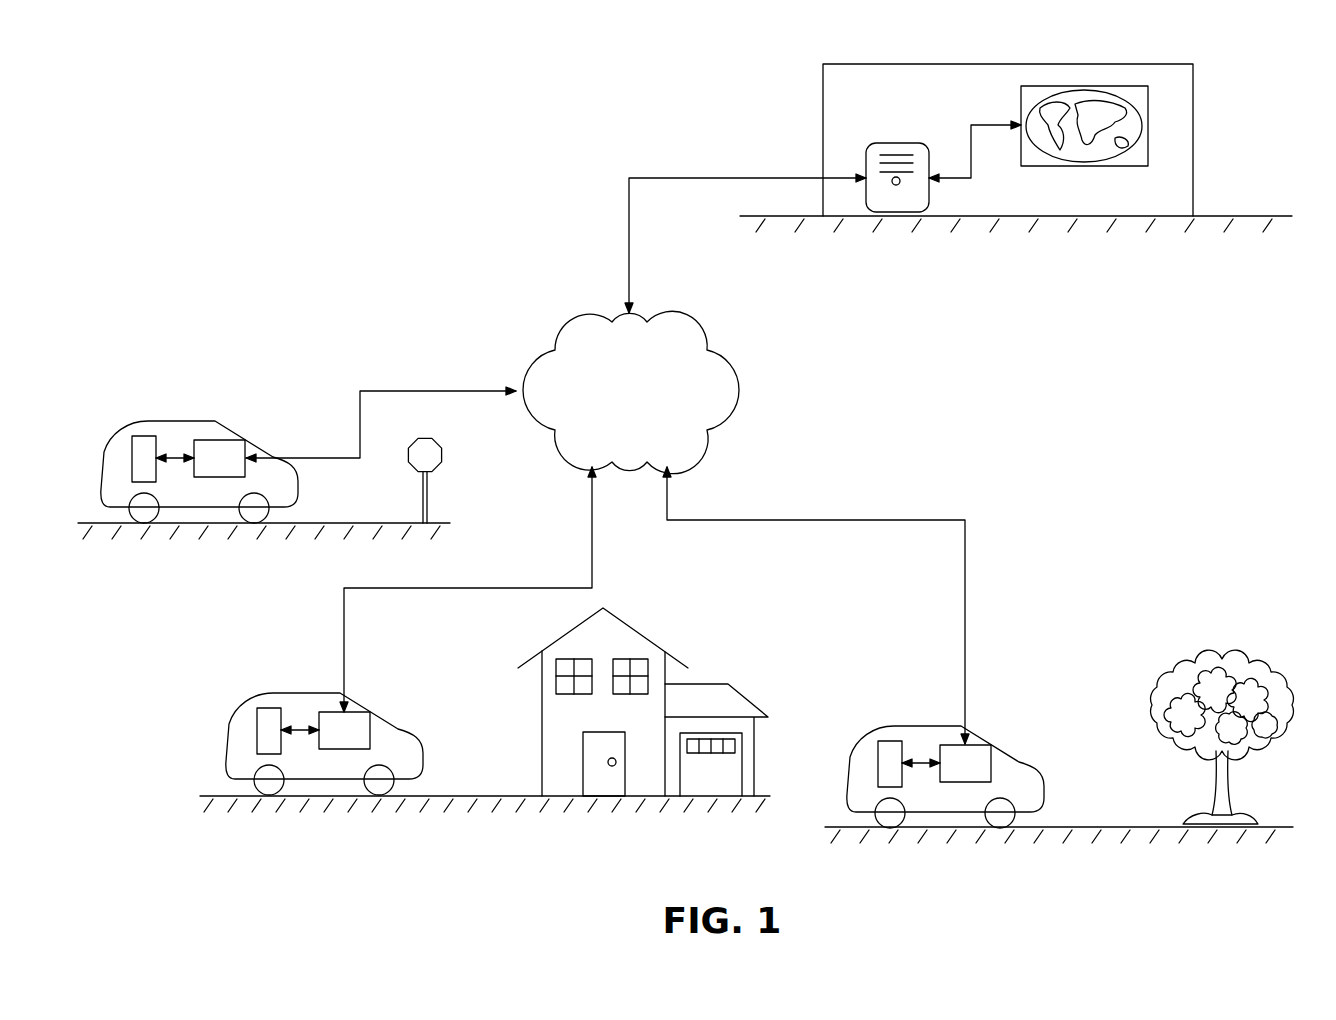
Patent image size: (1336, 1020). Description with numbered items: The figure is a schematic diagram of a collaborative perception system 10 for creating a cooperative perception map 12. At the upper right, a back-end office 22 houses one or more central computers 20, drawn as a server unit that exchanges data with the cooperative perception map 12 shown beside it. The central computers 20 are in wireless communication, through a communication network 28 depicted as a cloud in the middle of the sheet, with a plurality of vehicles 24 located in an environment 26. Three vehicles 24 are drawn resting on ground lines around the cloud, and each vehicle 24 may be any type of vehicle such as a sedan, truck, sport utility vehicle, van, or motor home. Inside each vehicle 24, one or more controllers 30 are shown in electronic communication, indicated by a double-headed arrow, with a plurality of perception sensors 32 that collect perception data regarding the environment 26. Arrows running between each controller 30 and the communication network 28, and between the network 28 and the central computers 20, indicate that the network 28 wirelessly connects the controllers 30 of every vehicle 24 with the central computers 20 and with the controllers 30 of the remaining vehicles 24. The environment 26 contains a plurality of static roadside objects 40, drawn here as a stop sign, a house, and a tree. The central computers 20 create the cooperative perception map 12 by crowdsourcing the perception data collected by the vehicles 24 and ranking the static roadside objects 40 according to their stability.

The collaborative perception system 10 is at (190, 96).
The cooperative perception map 12 is at (1081, 86).
The central computer 20 is at (896, 143).
The back-end office 22 is at (1016, 121).
The vehicle 24 is at (597, 595).
The environment 26 is at (1067, 522).
The communication network 28 is at (614, 404).
The controller 30 is at (206, 473).
The perception sensor 32 is at (142, 436).
The static roadside object 40 is at (430, 500).